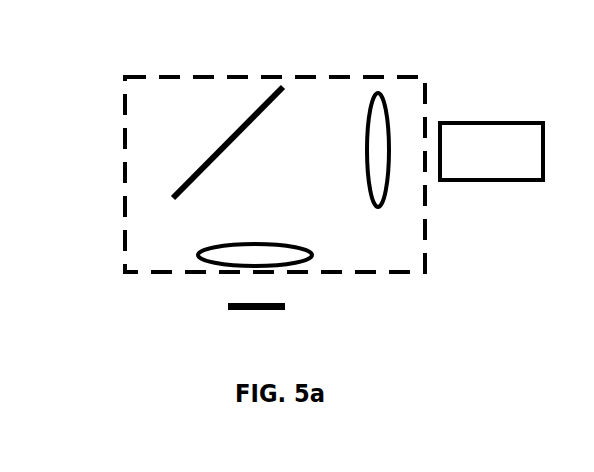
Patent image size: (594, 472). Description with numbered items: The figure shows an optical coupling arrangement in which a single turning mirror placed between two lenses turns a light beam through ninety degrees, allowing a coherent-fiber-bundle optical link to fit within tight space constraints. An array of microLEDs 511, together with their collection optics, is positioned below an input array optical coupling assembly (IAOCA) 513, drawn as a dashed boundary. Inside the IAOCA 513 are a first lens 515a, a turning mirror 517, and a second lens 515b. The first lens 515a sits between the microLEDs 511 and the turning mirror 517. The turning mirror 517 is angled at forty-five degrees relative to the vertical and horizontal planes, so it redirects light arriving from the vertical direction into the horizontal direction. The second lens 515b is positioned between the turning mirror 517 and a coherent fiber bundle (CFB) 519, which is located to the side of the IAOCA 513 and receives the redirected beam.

The array of microLEDs 511 is at (230, 308).
The input array optical coupling assembly 513 is at (340, 75).
The first lens 515a is at (260, 242).
The second lens 515b is at (367, 140).
The turning mirror 517 is at (225, 142).
The coherent fiber bundle 519 is at (510, 162).